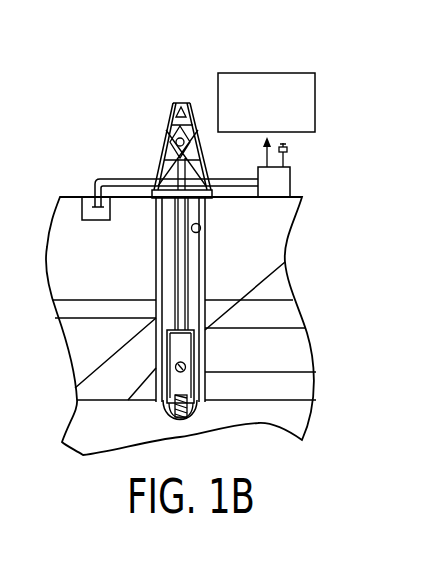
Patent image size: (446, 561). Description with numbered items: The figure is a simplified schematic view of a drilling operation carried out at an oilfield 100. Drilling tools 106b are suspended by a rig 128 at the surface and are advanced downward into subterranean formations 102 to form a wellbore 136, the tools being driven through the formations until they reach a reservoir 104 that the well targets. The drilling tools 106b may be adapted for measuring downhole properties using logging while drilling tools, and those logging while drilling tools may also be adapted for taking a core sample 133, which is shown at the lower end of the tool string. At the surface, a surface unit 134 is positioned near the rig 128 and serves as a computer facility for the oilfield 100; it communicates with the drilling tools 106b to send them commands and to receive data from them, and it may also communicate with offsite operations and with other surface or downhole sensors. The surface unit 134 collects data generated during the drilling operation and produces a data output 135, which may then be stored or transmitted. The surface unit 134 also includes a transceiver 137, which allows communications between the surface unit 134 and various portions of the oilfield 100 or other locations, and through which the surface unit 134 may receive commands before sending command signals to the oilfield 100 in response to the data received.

The oilfield 100 is at (106, 106).
The subterranean formations 102 is at (217, 293).
The reservoir 104 is at (278, 365).
The drilling tools 106b is at (164, 358).
The rig 128 is at (163, 147).
The core sample 133 is at (163, 412).
The surface unit 134 is at (292, 184).
The data output 135 is at (268, 73).
The wellbore 136 is at (201, 227).
The transceiver 137 is at (287, 156).